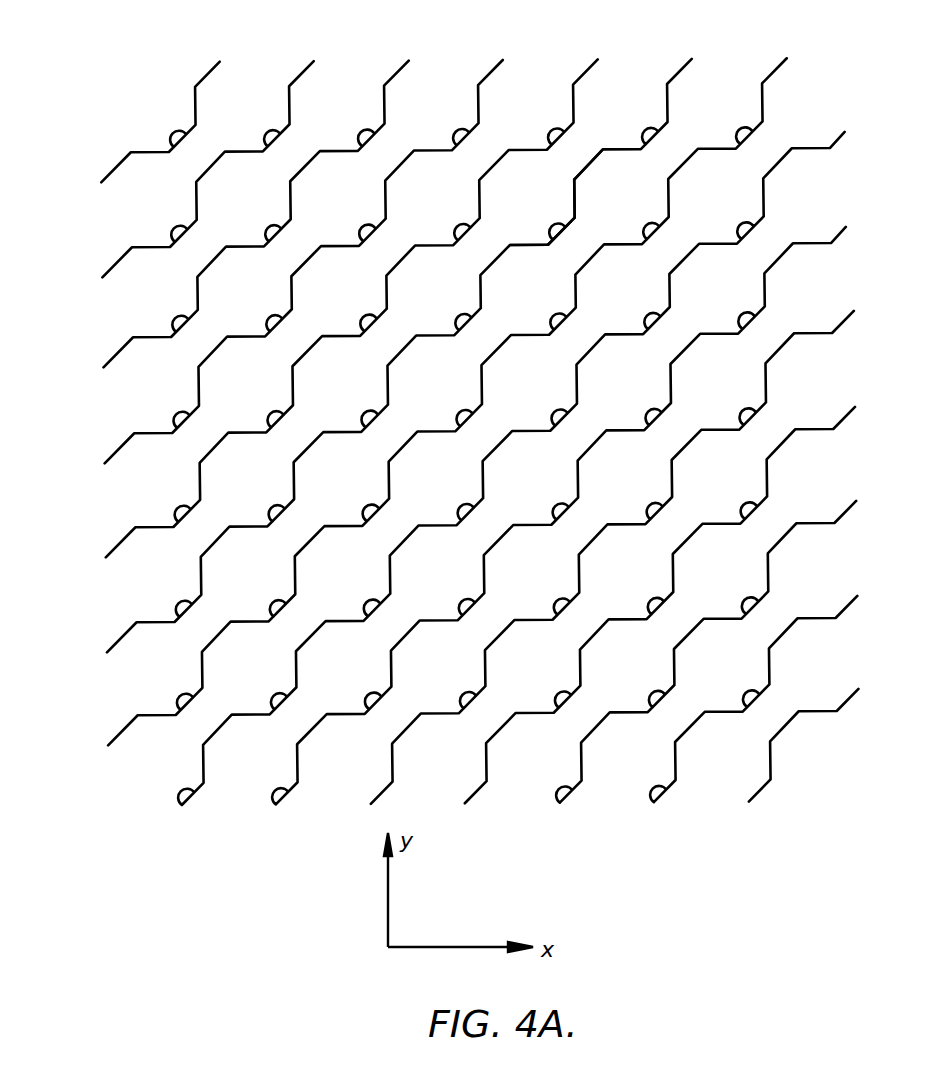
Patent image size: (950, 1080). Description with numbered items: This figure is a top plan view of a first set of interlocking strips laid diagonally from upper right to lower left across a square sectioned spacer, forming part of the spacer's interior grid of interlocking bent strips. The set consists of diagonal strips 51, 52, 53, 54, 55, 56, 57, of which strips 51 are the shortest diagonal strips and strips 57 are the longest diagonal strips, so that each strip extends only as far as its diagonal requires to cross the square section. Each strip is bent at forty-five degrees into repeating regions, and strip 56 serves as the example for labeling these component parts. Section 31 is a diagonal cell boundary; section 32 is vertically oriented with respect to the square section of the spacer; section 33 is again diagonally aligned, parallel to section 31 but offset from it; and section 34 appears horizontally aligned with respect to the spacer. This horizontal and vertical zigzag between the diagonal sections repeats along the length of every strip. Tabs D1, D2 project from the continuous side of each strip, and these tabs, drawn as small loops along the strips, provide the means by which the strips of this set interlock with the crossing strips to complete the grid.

The region 31 is at (586, 171).
The region 32 is at (571, 206).
The region 33 is at (547, 246).
The region 34 is at (520, 248).
The diagonal strip 51 is at (219, 63).
The diagonal strip 52 is at (313, 63).
The diagonal strip 53 is at (408, 63).
The diagonal strip 54 is at (502, 63).
The diagonal strip 55 is at (597, 63).
The diagonal strip 56 is at (691, 63).
The diagonal strip 57 is at (786, 63).
The tab D1 is at (213, 157).
The tab D2 is at (186, 229).